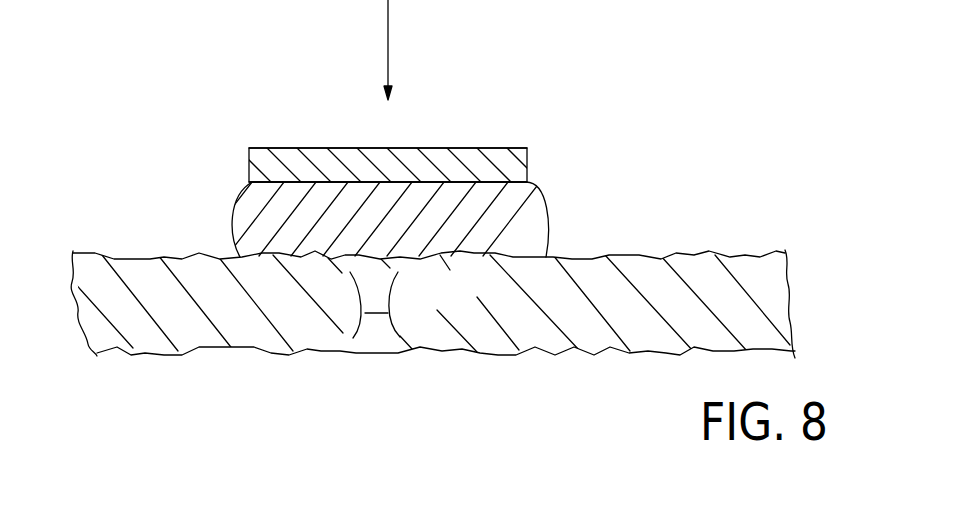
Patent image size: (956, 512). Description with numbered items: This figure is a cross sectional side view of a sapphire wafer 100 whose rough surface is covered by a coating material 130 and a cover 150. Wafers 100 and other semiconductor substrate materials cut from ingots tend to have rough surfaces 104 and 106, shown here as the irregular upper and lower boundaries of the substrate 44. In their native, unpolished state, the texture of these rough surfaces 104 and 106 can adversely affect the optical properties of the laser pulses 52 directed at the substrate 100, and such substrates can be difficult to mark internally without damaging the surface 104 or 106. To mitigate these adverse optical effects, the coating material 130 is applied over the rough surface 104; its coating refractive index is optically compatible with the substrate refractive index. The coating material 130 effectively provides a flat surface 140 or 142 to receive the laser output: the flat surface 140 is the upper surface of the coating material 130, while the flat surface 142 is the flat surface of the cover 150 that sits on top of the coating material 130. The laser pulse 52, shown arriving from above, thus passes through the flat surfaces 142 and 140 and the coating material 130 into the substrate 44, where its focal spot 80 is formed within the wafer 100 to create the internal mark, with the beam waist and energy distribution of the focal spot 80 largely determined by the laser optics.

The wafer 100 is at (116, 238).
The laser pulse 52 is at (388, 42).
The substrate 44 is at (432, 297).
The rough surface 104 is at (177, 253).
The rough surface 106 is at (330, 352).
The focal spot 80 is at (387, 310).
The coating material 130 is at (545, 222).
The flat surface 140 is at (527, 165).
The cover 150 is at (433, 160).
The flat surface 142 is at (497, 158).